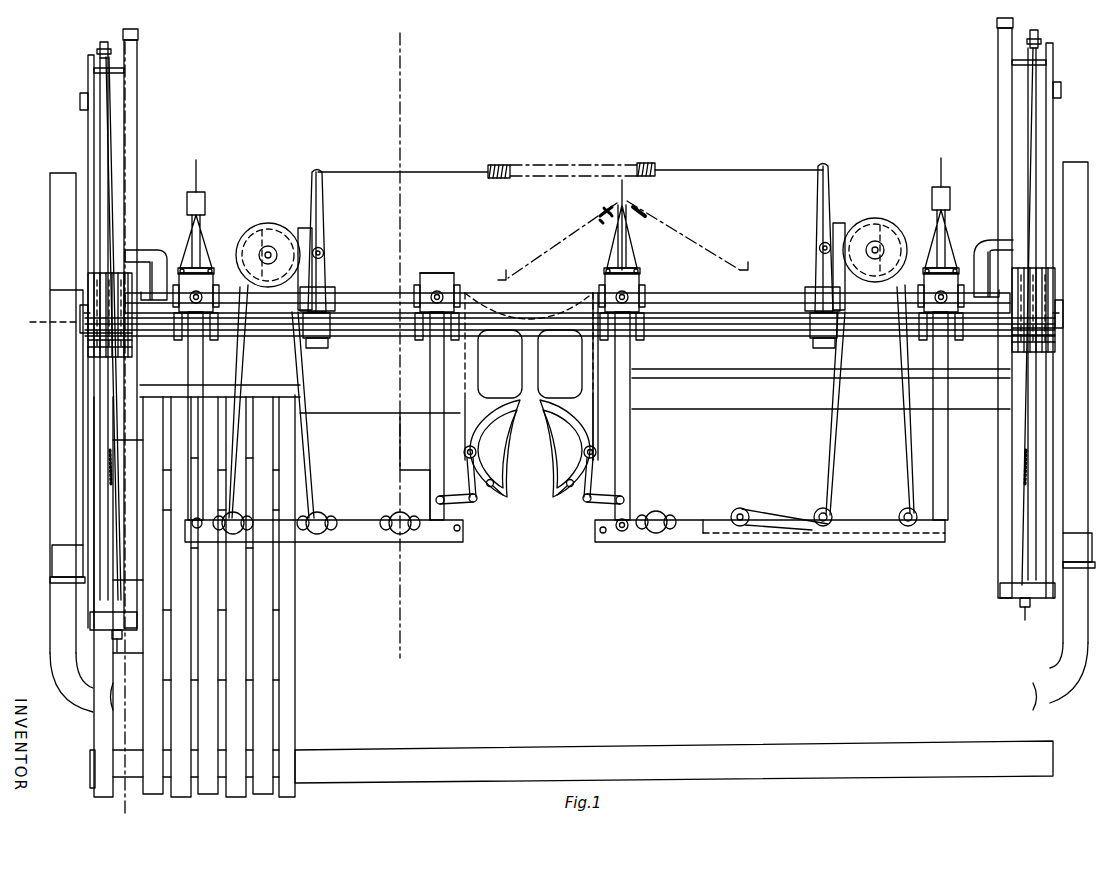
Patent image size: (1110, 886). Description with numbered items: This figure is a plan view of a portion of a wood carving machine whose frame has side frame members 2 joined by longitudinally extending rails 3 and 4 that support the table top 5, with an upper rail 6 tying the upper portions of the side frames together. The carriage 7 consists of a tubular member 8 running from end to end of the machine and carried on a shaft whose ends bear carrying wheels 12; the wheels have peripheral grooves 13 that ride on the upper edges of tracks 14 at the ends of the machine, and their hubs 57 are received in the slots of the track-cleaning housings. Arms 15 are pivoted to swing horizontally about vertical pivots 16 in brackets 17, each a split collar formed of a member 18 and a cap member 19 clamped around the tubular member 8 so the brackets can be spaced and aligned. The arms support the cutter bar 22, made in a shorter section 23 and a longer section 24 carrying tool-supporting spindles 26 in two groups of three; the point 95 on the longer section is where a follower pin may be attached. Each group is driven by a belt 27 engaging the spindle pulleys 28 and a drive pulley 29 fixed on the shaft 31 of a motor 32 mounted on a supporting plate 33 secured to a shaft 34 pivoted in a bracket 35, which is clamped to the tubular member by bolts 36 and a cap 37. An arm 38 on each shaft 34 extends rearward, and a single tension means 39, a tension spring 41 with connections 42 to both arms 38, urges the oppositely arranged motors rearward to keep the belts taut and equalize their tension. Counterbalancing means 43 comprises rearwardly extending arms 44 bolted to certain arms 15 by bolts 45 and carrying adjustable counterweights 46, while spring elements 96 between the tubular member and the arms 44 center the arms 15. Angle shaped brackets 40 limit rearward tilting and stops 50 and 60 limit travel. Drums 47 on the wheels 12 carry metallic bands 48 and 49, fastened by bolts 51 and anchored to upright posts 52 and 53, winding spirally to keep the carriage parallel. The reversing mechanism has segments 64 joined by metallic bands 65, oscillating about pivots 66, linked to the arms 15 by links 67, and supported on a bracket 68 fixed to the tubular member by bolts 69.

The side frame members 2 is at (392, 36).
The rail 3 is at (730, 750).
The rail 4 is at (114, 37).
The table top 5 is at (312, 703).
The upper rail 6 is at (62, 566).
The carriage 7 is at (361, 260).
The tubular member 8 is at (330, 340).
The carrying wheels 12 is at (88, 350).
The peripheral grooves 13 is at (90, 355).
The tracks 14 is at (90, 128).
The arms 15 is at (192, 372).
The vertical pivots 16 is at (205, 297).
The brackets 17 is at (209, 344).
The member 18 is at (188, 305).
The cap member 19 is at (181, 332).
The cutter bar 22 is at (363, 565).
The cutter bar section 23 is at (336, 542).
The cutter bar section 24 is at (712, 545).
The tool-supporting spindles 26 is at (741, 508).
The belt 27 is at (240, 365).
The pulleys 28 is at (822, 508).
The drive pulley 29 is at (280, 233).
The motor shaft 31 is at (265, 255).
The motor 32 is at (268, 226).
The supporting plate 33 is at (312, 238).
The shaft 34 is at (324, 253).
The bracket 35 is at (335, 295).
The bolts 36 is at (320, 332).
The cap 37 is at (312, 338).
The arm 38 is at (322, 204).
The tension means 39 is at (567, 156).
The angle shaped brackets 40 is at (148, 248).
The tension spring 41 is at (499, 166).
The connections 42 is at (425, 170).
The counterbalancing means 43 is at (222, 180).
The rearwardly extending arms 44 is at (207, 233).
The bolts 45 is at (188, 268).
The counterweights 46 is at (190, 198).
The drums 47 is at (130, 352).
The metallic band 48 is at (112, 508).
The metallic band 49 is at (110, 108).
The stop 50 is at (80, 99).
The bolts 51 is at (1090, 280).
The upright post 52 is at (112, 610).
The upright post 53 is at (99, 50).
The hubs 57 is at (80, 330).
The stop 60 is at (62, 582).
The segments 64 is at (528, 470).
The metallic bands 65 is at (513, 495).
The pivots 66 is at (470, 459).
The links 67 is at (465, 505).
The bracket 68 is at (593, 433).
The bolts 69 is at (466, 297).
The follower pin point 95 is at (655, 532).
The spring elements 96 is at (600, 230).